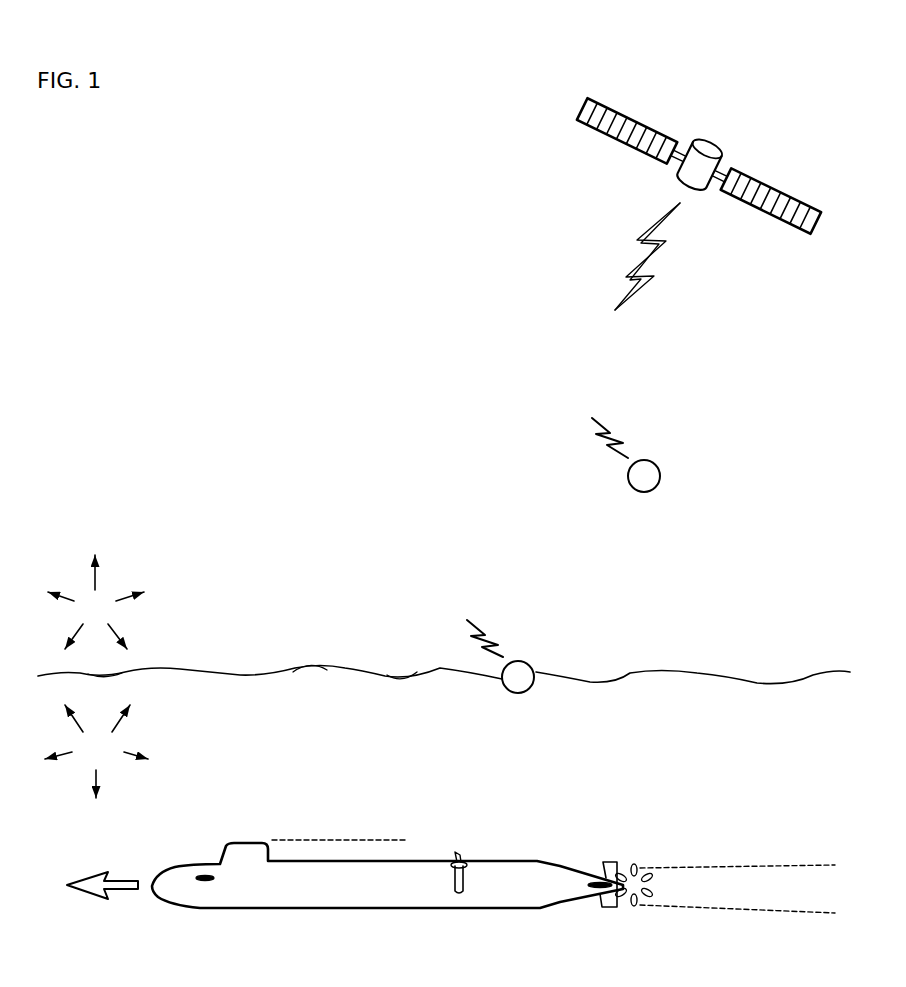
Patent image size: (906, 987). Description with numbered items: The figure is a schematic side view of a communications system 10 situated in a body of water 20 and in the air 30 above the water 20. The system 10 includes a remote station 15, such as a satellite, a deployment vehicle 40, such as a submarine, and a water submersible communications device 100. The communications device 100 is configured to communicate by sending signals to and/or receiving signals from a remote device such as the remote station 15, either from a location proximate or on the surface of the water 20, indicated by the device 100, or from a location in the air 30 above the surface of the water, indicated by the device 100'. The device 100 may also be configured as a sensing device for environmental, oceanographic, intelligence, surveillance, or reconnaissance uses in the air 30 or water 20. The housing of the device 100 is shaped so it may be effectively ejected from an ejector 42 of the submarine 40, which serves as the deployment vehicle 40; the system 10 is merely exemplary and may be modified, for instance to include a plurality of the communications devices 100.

The communications system 10 is at (348, 312).
The remote station 15 is at (715, 131).
The body of water 20 is at (96, 751).
The air 30 is at (96, 602).
The deployment vehicle 40 is at (565, 857).
The ejector 42 is at (475, 884).
The water submersible communications device 100 is at (564, 655).
The water submersible communications device 100' is at (691, 455).